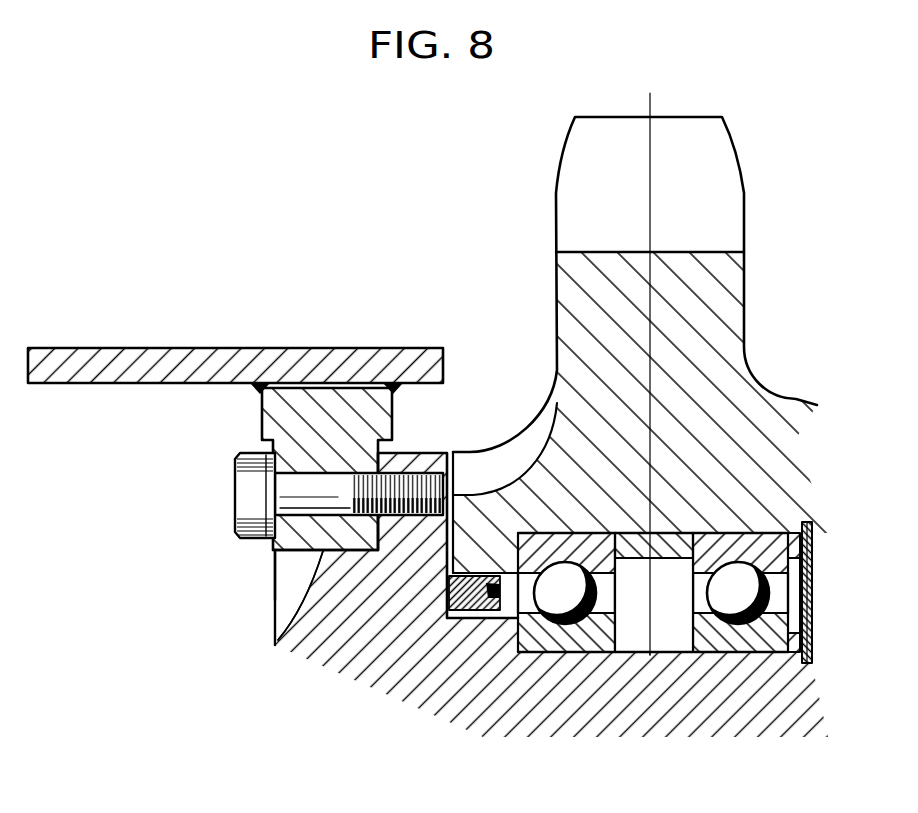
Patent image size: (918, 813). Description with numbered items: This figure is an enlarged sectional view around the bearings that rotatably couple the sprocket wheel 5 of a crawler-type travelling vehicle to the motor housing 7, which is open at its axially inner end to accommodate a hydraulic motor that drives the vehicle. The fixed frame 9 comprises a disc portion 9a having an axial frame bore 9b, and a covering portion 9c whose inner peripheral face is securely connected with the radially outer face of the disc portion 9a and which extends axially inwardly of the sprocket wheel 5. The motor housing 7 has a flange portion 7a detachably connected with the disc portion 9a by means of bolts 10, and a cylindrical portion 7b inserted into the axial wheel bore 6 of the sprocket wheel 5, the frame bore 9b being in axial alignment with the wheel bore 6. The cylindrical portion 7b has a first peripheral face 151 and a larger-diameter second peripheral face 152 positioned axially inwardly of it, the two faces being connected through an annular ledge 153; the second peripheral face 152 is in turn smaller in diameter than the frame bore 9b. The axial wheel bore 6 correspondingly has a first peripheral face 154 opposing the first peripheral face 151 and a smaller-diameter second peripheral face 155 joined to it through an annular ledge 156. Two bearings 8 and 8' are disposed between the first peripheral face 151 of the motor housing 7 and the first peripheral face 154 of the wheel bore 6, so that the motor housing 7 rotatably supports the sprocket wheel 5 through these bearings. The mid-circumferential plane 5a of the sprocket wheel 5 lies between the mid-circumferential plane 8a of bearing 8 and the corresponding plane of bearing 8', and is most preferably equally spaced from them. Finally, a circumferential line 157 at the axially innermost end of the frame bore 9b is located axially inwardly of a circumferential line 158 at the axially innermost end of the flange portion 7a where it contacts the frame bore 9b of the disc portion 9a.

The sprocket wheel 5 is at (744, 168).
The mid-circumferential plane of the sprocket wheel 5a is at (652, 104).
The axial wheel bore 6 is at (815, 534).
The motor housing 7 is at (268, 637).
The flange portion 7a is at (418, 453).
The cylindrical portion 7b is at (808, 656).
The bearing 8 is at (740, 619).
The bearing 8' is at (566, 619).
The mid-circumferential plane of the bearing 8a is at (565, 518).
The fixed frame 9 is at (216, 398).
The disc portion 9a is at (322, 393).
The axial frame bore 9b is at (300, 553).
The covering portion 9c is at (109, 348).
The bolt 10 is at (238, 493).
The first peripheral face of the cylindrical portion 151 is at (668, 652).
The second peripheral face of the cylindrical portion 152 is at (484, 622).
The annular ledge 153 is at (528, 653).
The first peripheral face of the axial wheel bore 154 is at (667, 533).
The second peripheral face of the axial wheel bore 155 is at (507, 582).
The annular ledge 156 is at (530, 533).
The circumferential line 157 is at (278, 550).
The circumferential line 158 is at (328, 553).